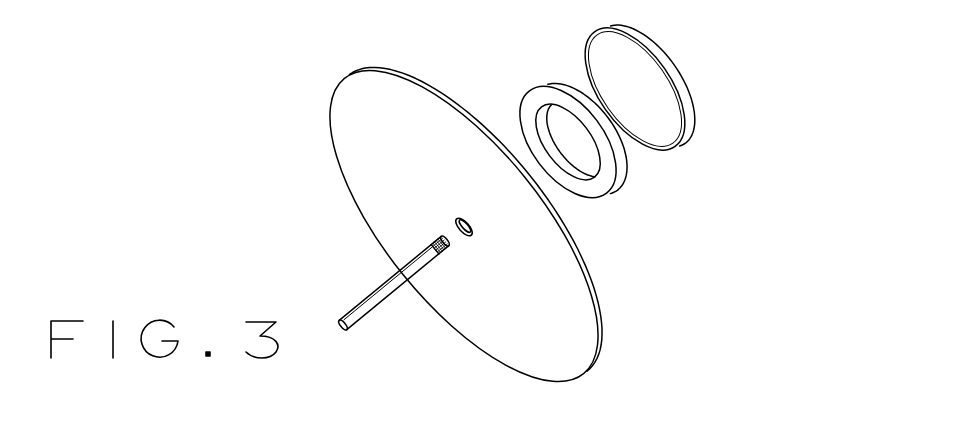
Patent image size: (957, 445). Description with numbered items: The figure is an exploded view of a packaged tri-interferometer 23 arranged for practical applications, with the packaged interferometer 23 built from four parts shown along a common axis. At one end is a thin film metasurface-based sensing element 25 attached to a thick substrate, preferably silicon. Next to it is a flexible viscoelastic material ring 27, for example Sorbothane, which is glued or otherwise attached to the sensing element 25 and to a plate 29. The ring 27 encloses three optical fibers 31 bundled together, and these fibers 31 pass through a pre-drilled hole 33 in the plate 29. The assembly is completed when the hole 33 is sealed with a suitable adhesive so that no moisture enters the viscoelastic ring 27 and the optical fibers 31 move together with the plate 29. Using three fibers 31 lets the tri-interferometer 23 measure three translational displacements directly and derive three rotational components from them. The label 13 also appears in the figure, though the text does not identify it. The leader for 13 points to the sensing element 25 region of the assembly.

The valve assembly 13 is at (606, 62).
The packaged tri-interferometer 23 is at (661, 231).
The sensing element 25 is at (698, 121).
The ring 27 is at (620, 183).
The plate 29 is at (596, 362).
The optical fibers 31 is at (383, 301).
The hole 33 is at (455, 218).